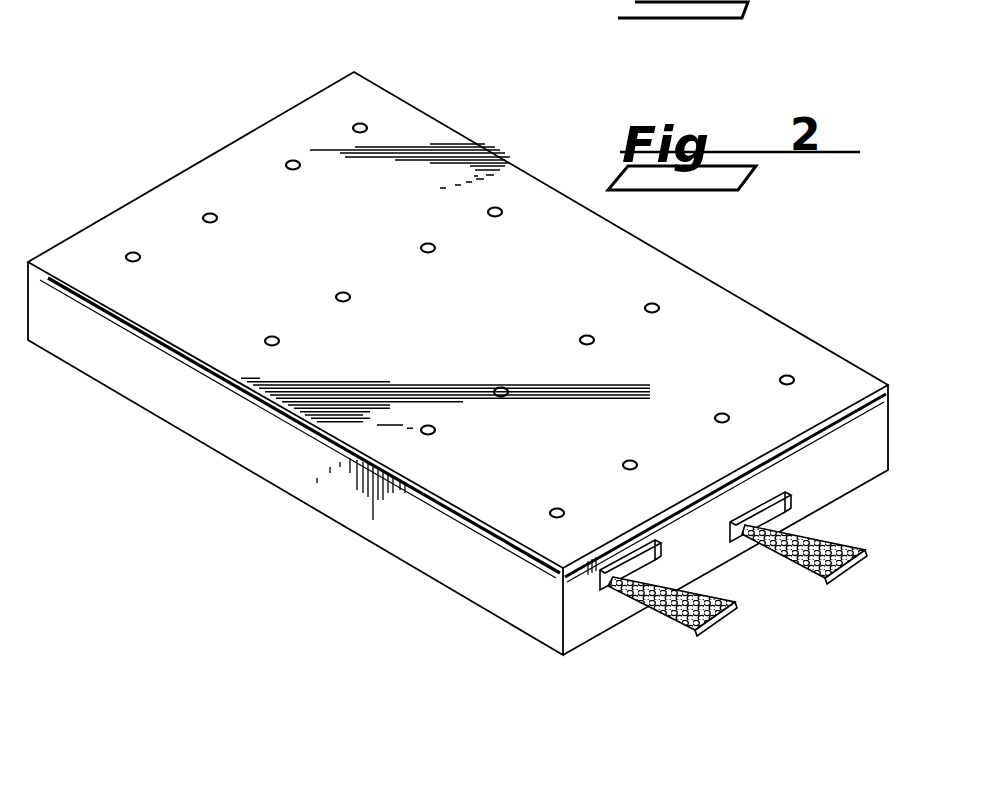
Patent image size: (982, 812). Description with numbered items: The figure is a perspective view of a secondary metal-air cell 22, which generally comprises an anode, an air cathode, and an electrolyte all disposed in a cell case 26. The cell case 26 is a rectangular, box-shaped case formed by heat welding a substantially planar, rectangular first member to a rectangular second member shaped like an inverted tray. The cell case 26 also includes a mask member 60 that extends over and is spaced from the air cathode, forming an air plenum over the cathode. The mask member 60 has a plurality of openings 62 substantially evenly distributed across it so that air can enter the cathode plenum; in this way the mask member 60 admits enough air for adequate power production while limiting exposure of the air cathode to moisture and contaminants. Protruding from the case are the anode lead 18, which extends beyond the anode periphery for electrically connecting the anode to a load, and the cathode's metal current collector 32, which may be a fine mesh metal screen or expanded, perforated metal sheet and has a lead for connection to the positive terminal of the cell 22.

The metal-air cell 22 is at (162, 112).
The mask member 60 is at (265, 168).
The openings 62 is at (134, 253).
The cell case 26 is at (263, 456).
The lead 18 is at (787, 560).
The metal current collector 32 is at (668, 617).